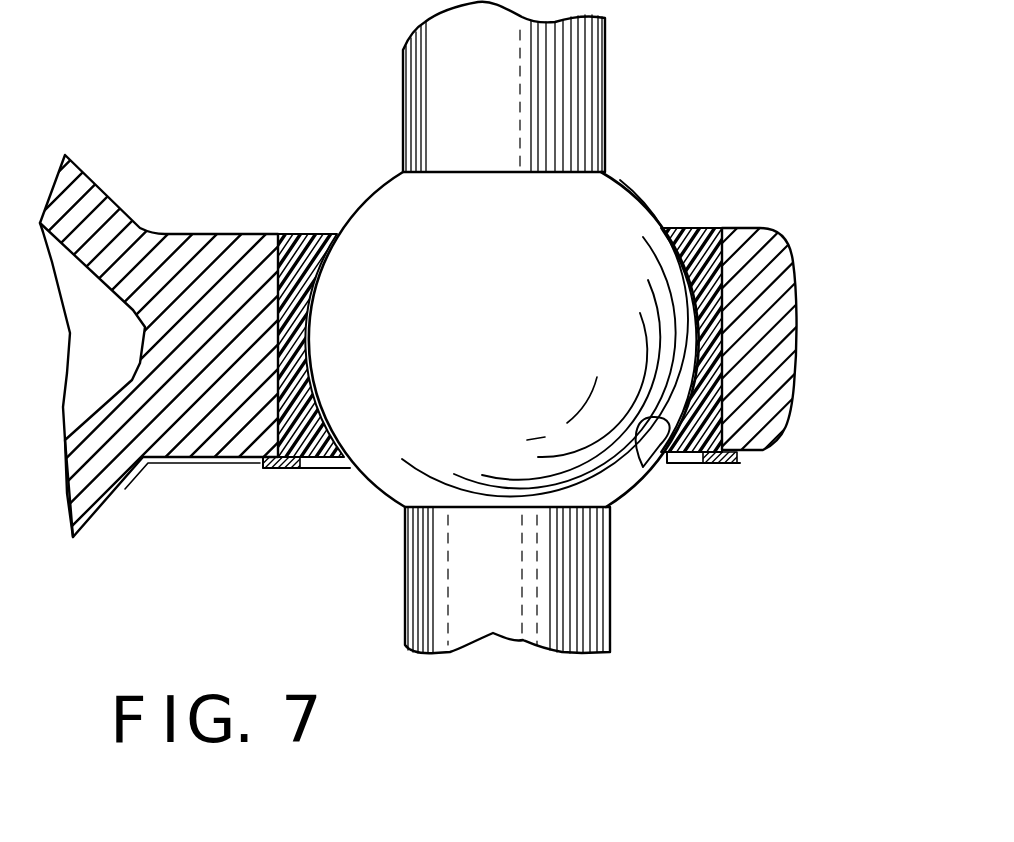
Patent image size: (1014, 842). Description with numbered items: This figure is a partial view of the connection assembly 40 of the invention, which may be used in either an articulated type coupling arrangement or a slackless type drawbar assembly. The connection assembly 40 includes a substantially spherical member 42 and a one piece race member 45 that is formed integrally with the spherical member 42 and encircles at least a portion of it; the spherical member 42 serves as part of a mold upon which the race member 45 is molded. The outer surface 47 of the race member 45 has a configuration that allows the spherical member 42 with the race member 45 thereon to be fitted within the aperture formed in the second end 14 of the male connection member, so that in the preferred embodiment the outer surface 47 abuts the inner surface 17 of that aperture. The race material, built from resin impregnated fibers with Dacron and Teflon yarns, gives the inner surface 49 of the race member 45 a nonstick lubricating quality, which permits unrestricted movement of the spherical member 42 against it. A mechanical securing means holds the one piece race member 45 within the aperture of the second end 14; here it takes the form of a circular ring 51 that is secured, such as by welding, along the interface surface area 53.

The second end 14 is at (773, 248).
The inner surface 17 is at (282, 390).
The connection assembly 40 is at (683, 146).
The spherical member 42 is at (368, 205).
The one piece race member 45 is at (722, 293).
The outer surface 47 is at (280, 270).
The inner surface 49 is at (643, 467).
The circular ring 51 is at (298, 469).
The interface surface area 53 is at (262, 469).